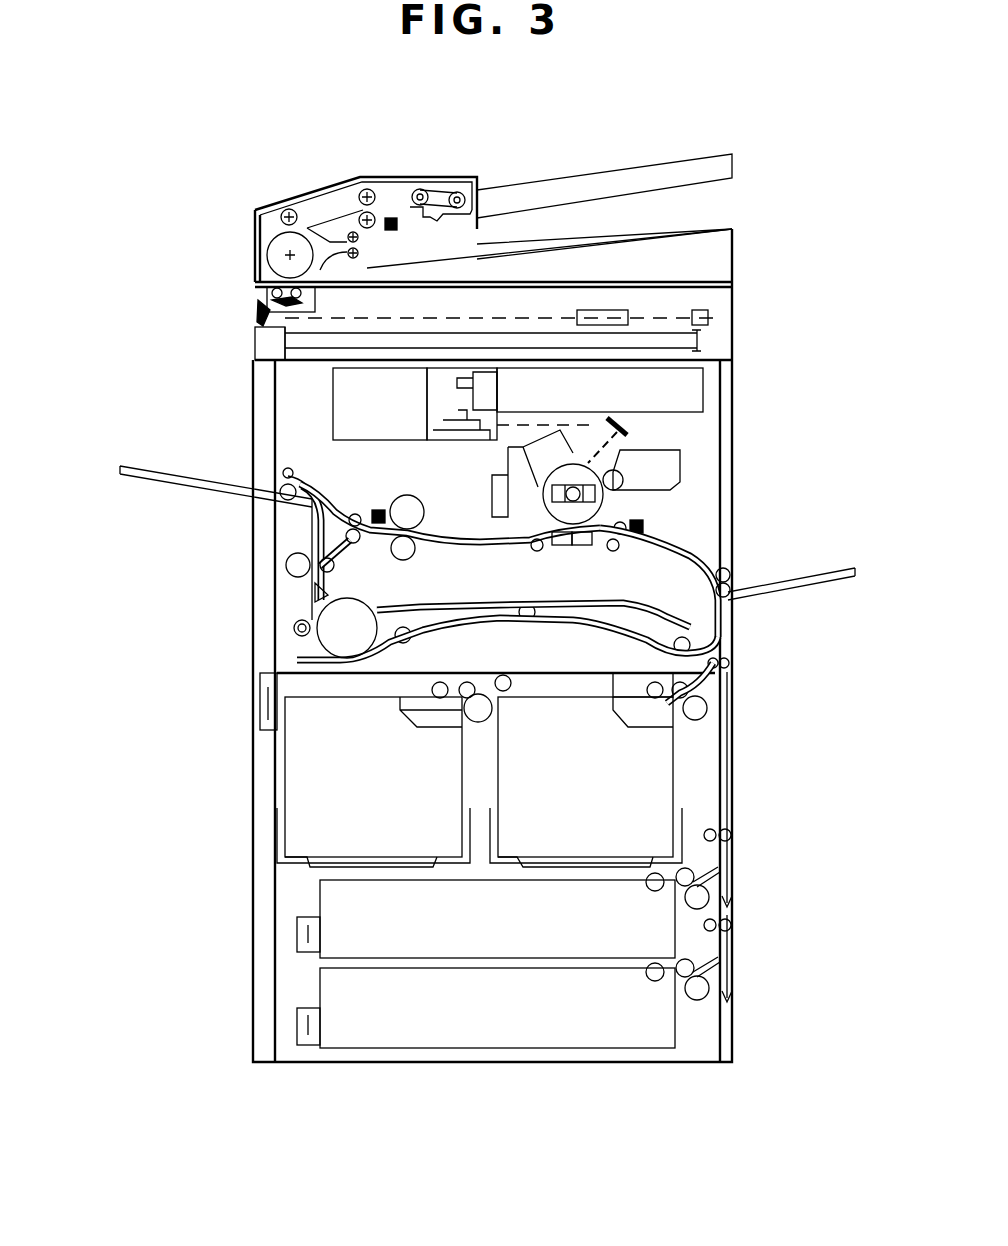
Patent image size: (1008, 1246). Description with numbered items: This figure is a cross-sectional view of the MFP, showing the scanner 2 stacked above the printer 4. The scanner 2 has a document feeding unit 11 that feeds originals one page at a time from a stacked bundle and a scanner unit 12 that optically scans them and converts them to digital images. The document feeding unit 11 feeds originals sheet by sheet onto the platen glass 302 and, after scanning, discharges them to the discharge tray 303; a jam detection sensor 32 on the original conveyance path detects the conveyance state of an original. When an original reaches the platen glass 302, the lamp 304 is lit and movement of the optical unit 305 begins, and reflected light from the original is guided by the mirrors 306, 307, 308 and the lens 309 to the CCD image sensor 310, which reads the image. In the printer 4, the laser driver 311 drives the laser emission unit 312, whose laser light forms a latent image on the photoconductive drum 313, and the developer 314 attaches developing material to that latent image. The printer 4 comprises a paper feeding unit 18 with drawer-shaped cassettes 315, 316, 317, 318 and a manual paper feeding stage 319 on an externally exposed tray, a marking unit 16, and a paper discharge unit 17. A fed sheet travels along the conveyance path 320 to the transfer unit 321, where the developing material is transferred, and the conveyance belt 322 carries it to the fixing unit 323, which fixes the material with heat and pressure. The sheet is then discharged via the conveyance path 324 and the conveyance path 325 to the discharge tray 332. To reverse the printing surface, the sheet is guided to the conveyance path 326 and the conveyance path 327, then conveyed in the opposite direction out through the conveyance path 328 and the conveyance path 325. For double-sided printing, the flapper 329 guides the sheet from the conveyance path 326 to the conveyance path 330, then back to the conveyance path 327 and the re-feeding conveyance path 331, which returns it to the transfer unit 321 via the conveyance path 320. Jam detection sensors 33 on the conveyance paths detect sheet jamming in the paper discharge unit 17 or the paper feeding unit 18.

The scanner 2 is at (850, 175).
The printer 4 is at (850, 366).
The document feeding unit 11 is at (120, 152).
The scanner unit 12 is at (120, 283).
The marking unit 16 is at (786, 366).
The paper discharge unit 17 is at (120, 366).
The paper feeding unit 18 is at (120, 650).
The jam detection sensor 32 is at (393, 216).
The jam detection sensor 33 is at (642, 522).
The platen glass 302 is at (723, 292).
The discharge tray 303 is at (633, 243).
The lamp 304 is at (270, 272).
The optical unit 305 is at (262, 289).
The mirror 306 is at (318, 300).
The mirror 307 is at (265, 298).
The mirror 308 is at (260, 322).
The lens 309 is at (600, 311).
The CCD image sensor 310 is at (710, 317).
The laser driver 311 is at (333, 416).
The laser emission unit 312 is at (452, 441).
The photoconductive drum 313 is at (546, 499).
The developer 314 is at (678, 487).
The cassette 315 is at (678, 782).
The cassette 316 is at (285, 768).
The cassette 317 is at (320, 895).
The cassette 318 is at (320, 985).
The manual paper feeding stage 319 is at (733, 594).
The conveyance path 320 is at (680, 558).
The transfer unit 321 is at (583, 550).
The conveyance belt 322 is at (493, 548).
The fixing unit 323 is at (405, 513).
The conveyance path 324 is at (327, 493).
The conveyance path 325 is at (283, 476).
The conveyance path 326 is at (335, 543).
The conveyance path 327 is at (296, 627).
The conveyance path 328 is at (310, 532).
The flapper 329 is at (312, 594).
The conveyance path 330 is at (420, 607).
The conveyance path 331 is at (440, 634).
The discharge tray 332 is at (152, 482).